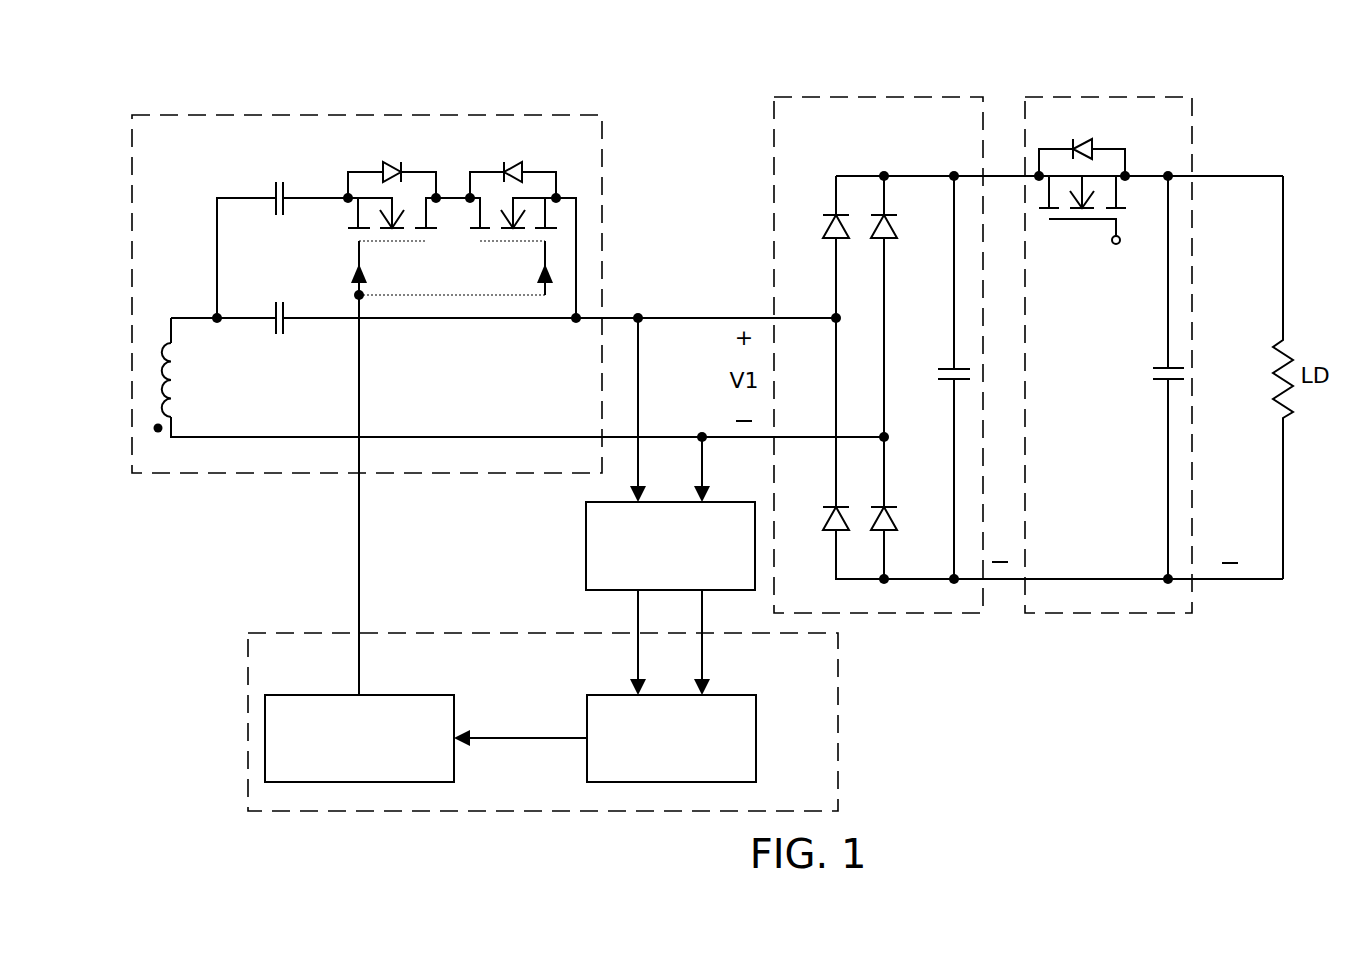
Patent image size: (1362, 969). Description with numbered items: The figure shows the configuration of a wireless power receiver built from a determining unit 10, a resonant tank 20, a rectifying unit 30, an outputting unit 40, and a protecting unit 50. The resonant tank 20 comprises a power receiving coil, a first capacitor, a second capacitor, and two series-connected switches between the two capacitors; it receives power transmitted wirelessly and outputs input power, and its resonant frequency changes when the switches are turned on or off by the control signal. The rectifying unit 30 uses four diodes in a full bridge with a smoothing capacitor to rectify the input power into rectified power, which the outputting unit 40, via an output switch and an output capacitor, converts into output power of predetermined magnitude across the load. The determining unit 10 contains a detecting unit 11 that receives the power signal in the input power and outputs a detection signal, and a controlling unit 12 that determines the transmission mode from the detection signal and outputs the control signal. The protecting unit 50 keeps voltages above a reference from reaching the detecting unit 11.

The determining unit 10 is at (838, 722).
The detecting unit 11 is at (756, 738).
The controlling unit 12 is at (428, 695).
The resonant tank 20 is at (567, 115).
The rectifying unit 30 is at (945, 97).
The outputting unit 40 is at (1155, 97).
The protecting unit 50 is at (729, 502).